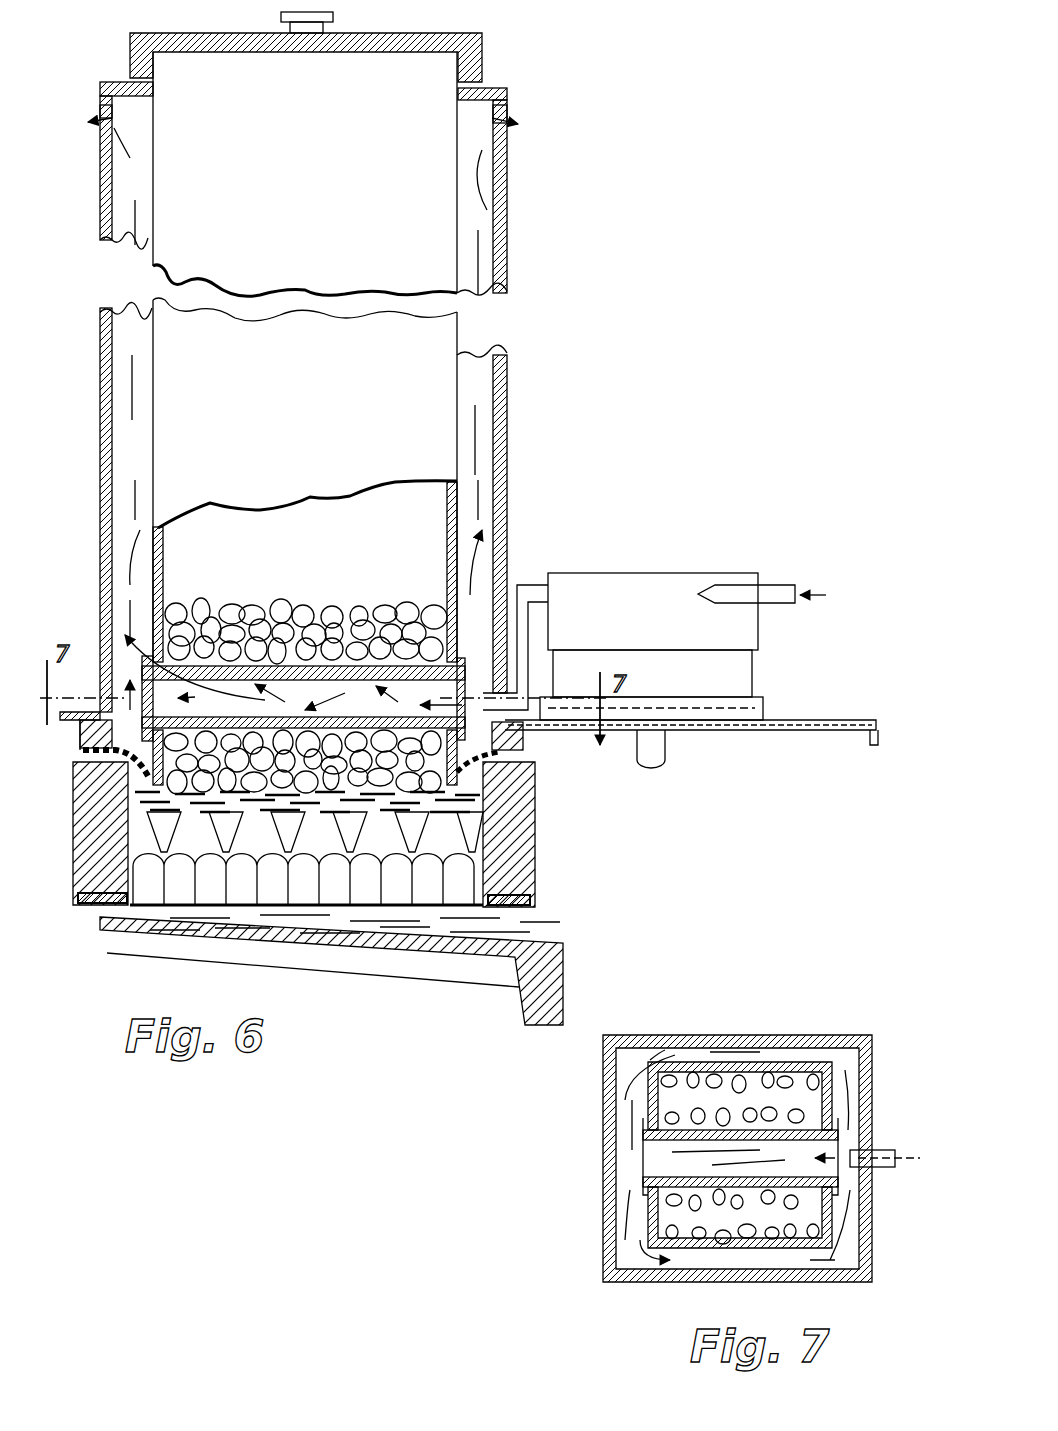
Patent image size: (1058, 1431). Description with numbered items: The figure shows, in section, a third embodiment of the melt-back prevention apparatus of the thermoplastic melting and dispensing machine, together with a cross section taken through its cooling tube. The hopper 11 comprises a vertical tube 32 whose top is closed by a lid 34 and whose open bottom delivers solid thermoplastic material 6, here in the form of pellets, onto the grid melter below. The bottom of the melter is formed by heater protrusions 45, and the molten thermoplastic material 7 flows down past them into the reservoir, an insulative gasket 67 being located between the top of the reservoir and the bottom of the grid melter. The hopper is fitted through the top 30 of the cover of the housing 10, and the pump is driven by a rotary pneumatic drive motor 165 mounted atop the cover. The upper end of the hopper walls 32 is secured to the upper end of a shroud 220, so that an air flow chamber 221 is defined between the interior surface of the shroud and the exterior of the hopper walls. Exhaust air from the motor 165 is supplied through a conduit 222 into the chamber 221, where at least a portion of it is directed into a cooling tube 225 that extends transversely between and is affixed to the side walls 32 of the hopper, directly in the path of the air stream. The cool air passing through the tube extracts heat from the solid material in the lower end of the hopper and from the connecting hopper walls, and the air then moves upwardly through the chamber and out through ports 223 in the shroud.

In FIG. 6, the solid thermoplastic material 6 is at (342, 604).
In FIG. 7, the solid thermoplastic material 6 is at (772, 1085).
In FIG. 6, the molten thermoplastic material 7 is at (455, 797).
In FIG. 6, the housing 10 is at (874, 722).
In FIG. 6, the hopper 11 is at (96, 242).
In FIG. 7, the hopper 11 is at (601, 1220).
In FIG. 6, the top of the cover 30 is at (800, 728).
In FIG. 6, the vertical tube 32 is at (165, 540).
In FIG. 7, the vertical tube 32 is at (700, 1062).
In FIG. 6, the lid 34 is at (438, 40).
In FIG. 6, the protrusions 45 is at (308, 858).
In FIG. 6, the insulative gasket 67 is at (535, 905).
In FIG. 6, the drive motor 165 is at (682, 597).
In FIG. 6, the shroud 220 is at (506, 434).
In FIG. 7, the shroud 220 is at (603, 1282).
In FIG. 6, the air flow chamber 221 is at (486, 486).
In FIG. 7, the air flow chamber 221 is at (848, 1042).
In FIG. 6, the conduit 222 is at (527, 592).
In FIG. 7, the conduit 222 is at (880, 1150).
In FIG. 6, the ports 223 is at (100, 106).
In FIG. 6, the cooling tube 225 is at (412, 714).
In FIG. 7, the cooling tube 225 is at (655, 1156).